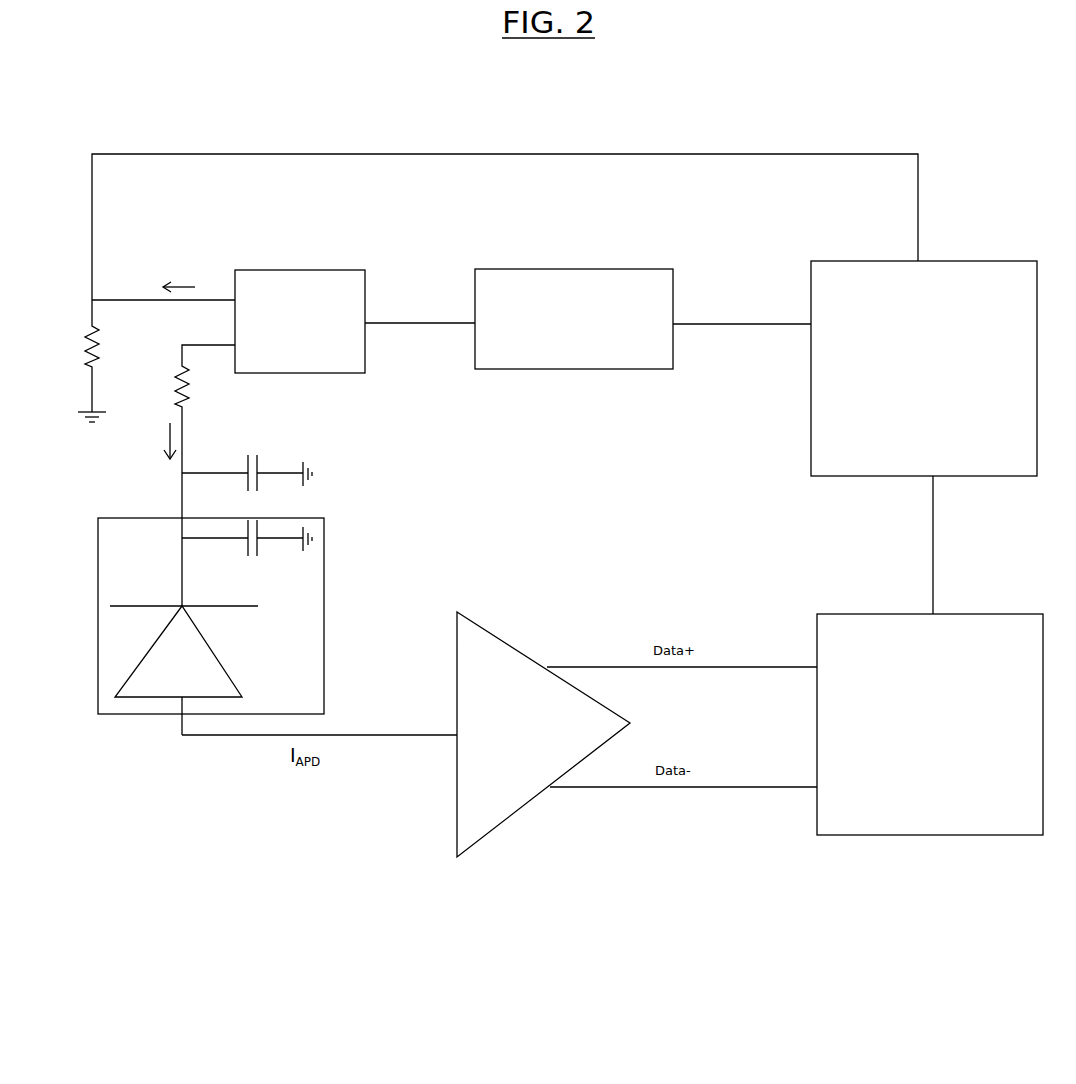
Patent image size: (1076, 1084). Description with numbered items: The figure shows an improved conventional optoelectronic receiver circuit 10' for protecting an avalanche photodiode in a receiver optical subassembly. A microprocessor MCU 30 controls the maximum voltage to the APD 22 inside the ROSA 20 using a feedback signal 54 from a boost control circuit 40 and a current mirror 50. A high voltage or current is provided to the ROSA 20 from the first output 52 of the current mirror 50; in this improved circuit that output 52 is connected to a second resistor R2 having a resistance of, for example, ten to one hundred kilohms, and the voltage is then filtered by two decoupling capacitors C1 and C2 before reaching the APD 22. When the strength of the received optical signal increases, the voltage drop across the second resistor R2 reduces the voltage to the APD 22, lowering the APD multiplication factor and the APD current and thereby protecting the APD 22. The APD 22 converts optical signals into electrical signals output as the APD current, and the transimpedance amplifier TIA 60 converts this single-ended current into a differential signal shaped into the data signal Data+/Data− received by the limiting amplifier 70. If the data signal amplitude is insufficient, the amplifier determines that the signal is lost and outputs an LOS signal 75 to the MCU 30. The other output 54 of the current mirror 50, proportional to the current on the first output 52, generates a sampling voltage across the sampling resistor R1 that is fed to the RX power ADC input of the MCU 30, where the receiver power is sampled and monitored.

The circuit 10' is at (805, 71).
The receiver optical subassembly (ROSA) 20 is at (98, 548).
The APD 22 is at (140, 653).
The MCU 30 is at (997, 261).
The boost control circuit 40 is at (568, 269).
The current mirror 50 is at (276, 270).
The first output 52 is at (200, 345).
The feedback signal 54 is at (222, 300).
The transimpedance amplifier (TIA) 60 is at (497, 628).
The limiting amplifier 70 is at (945, 737).
The LOS signal 75 is at (933, 547).
The sampling resistor R1 is at (78, 372).
The second resistor R2 is at (164, 484).
The decoupling capacitor C1 is at (247, 460).
The decoupling capacitor C2 is at (247, 552).